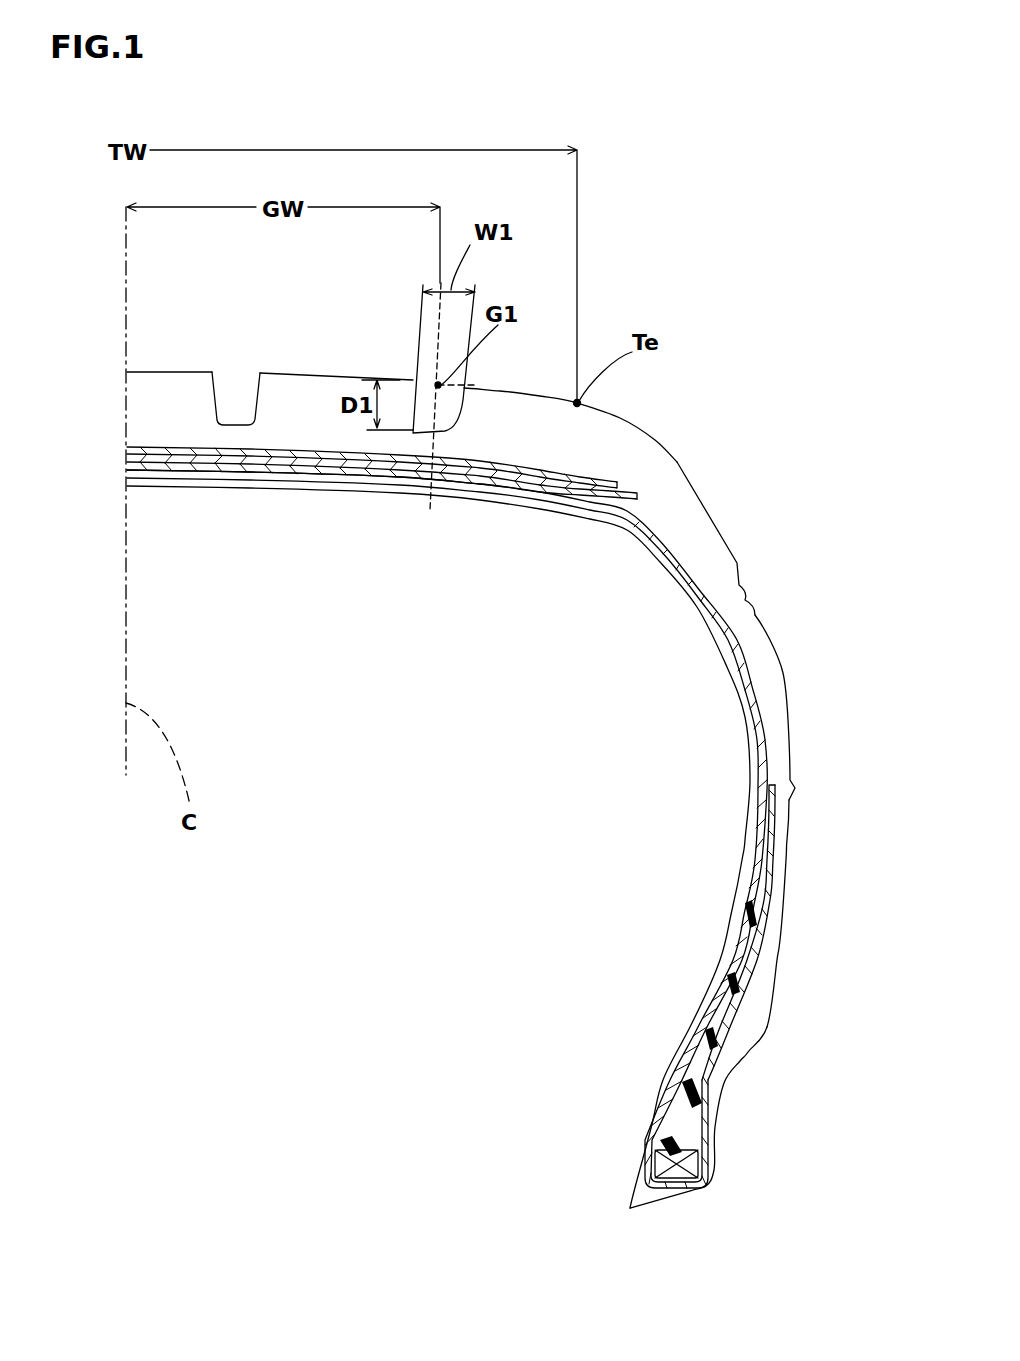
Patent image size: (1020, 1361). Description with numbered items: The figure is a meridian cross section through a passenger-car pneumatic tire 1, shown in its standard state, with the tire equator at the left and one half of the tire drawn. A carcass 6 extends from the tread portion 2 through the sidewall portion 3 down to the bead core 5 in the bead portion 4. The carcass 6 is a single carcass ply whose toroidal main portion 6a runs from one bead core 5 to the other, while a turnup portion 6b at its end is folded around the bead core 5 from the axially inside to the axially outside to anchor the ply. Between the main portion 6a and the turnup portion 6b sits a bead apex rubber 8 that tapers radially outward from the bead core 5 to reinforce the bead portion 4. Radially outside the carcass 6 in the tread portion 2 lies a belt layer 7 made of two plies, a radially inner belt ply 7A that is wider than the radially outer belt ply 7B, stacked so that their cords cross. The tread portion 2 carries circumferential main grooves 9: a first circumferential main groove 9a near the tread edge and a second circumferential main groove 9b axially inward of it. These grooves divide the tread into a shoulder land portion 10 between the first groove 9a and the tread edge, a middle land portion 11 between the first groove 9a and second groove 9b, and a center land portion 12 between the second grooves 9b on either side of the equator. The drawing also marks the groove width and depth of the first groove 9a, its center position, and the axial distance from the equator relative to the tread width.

The pneumatic tire 1 is at (648, 293).
The tread portion 2 is at (515, 280).
The sidewall portion 3 is at (800, 656).
The bead portion 4 is at (758, 1113).
The bead core 5 is at (672, 1170).
The carcass 6 is at (625, 712).
The main portion 6a is at (758, 737).
The turnup portion 6b is at (770, 810).
The belt layer 7 is at (329, 575).
The radially inner belt ply 7A is at (233, 453).
The radially outer belt ply 7B is at (306, 460).
The bead apex rubber 8 is at (698, 1070).
The circumferential main groove 9 is at (337, 357).
The first circumferential main groove 9a is at (427, 394).
The second circumferential main groove 9b is at (239, 389).
The shoulder land portion 10 is at (533, 395).
The middle land portion 11 is at (303, 372).
The center land portion 12 is at (176, 372).